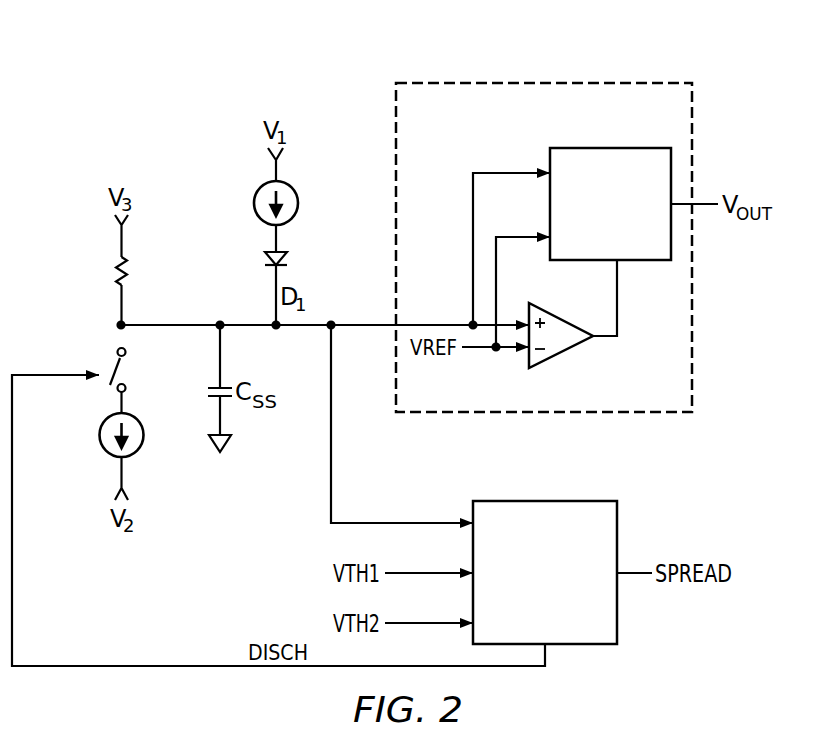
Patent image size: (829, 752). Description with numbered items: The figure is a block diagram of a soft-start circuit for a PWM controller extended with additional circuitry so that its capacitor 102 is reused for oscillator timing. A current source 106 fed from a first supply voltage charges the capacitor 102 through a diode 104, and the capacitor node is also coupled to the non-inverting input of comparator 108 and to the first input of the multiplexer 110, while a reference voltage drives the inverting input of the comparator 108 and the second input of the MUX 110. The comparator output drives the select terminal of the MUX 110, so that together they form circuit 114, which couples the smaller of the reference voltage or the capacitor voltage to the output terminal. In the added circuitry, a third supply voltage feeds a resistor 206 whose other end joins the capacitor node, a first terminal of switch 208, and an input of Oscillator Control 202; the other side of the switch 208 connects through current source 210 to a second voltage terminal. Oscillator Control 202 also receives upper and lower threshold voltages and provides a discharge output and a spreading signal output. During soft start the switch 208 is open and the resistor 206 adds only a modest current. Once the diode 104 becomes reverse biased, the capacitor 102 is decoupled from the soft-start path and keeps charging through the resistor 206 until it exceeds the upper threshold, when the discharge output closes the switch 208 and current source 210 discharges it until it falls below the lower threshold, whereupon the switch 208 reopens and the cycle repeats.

The capacitor 102 is at (216, 388).
The diode D1 104 is at (267, 257).
The current source 106 is at (254, 201).
The comparator 108 is at (563, 356).
The multiplexer 110 is at (610, 148).
The circuit 114 is at (651, 76).
The Oscillator Control 202 is at (583, 646).
The resistor 206 is at (118, 268).
The switch 208 is at (111, 368).
The current source 210 is at (99, 436).